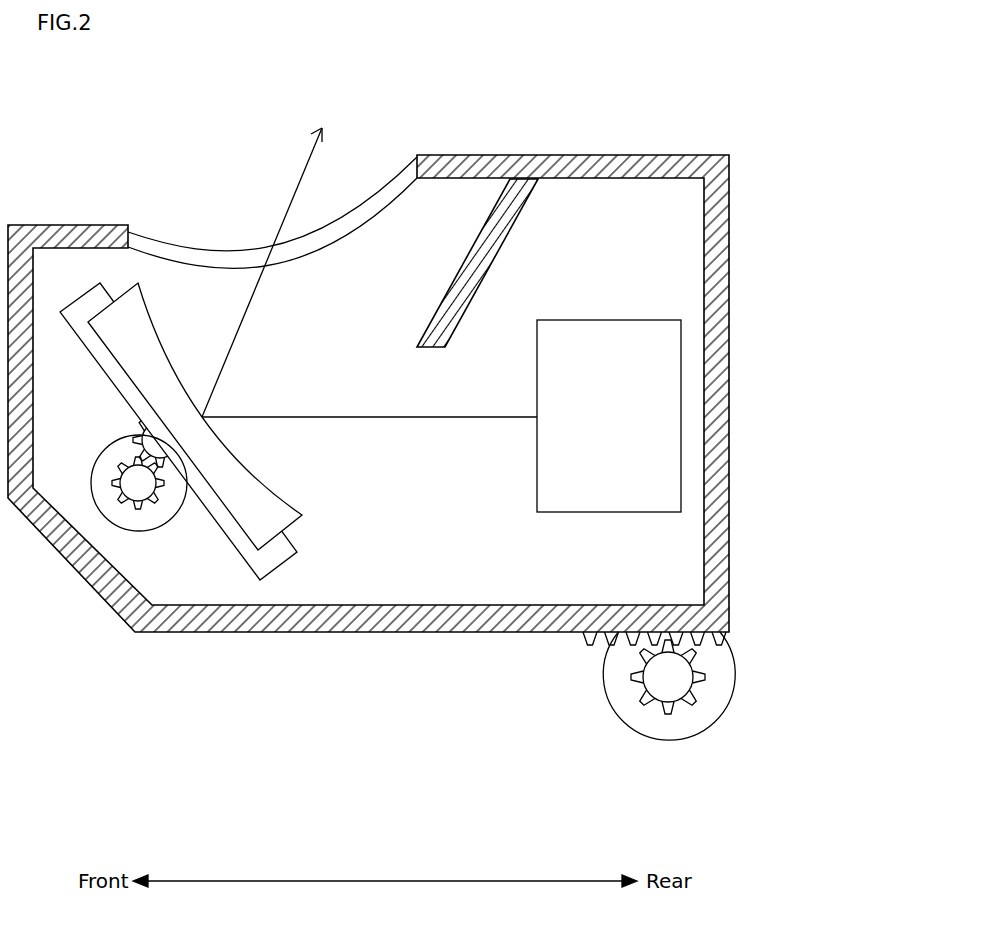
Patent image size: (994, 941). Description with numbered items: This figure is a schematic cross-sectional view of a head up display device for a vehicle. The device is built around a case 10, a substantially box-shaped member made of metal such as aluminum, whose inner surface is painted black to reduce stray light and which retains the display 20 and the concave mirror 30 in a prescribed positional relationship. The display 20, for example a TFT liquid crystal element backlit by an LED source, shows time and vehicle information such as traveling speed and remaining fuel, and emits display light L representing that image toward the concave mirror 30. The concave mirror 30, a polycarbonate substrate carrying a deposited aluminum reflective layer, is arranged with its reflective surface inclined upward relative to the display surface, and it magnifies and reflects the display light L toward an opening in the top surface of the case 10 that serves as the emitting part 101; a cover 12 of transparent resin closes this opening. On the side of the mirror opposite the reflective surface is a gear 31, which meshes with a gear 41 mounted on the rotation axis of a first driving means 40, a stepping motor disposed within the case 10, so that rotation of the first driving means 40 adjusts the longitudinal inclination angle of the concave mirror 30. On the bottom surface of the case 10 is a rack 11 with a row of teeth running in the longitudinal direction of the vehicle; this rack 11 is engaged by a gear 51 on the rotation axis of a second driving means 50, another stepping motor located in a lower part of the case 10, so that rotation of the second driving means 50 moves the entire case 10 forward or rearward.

The case 10 is at (627, 155).
The rack 11 is at (588, 641).
The cover 12 is at (150, 246).
The emitting part 101 is at (343, 215).
The display light L is at (300, 178).
The display 20 is at (590, 320).
The concave mirror 30 is at (303, 515).
The gear 31 is at (137, 440).
The first driving means 40 is at (134, 531).
The gear 41 is at (116, 480).
The second driving means 50 is at (661, 743).
The gear 51 is at (648, 700).